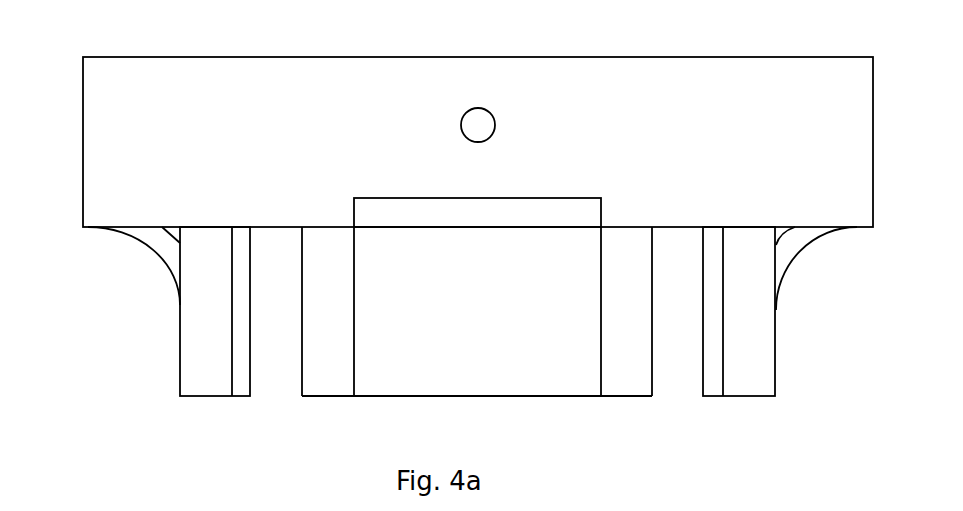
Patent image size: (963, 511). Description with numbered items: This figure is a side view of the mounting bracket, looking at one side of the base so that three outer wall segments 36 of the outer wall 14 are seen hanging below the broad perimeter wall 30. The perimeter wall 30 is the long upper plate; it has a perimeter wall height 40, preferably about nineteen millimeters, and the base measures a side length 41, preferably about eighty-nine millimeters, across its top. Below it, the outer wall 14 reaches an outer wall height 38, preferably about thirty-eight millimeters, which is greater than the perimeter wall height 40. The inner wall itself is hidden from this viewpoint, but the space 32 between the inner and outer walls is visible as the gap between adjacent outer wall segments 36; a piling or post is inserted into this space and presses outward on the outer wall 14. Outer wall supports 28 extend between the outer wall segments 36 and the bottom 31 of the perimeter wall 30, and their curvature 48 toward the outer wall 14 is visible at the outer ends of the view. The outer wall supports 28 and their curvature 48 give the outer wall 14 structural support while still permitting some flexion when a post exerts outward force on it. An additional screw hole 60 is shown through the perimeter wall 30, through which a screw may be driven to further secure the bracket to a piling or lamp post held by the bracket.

The perimeter wall 30 is at (253, 129).
The additional screw holes 60 is at (484, 122).
The outer wall supports 28 is at (468, 315).
The outer wall 14 is at (198, 386).
The outer wall segments 36 is at (621, 385).
The space 32 is at (676, 380).
The bottom of perimeter wall 31 is at (88, 228).
The curvature 48 is at (793, 258).
The side length 41 is at (876, 15).
The outer wall height 38 is at (52, 53).
The perimeter wall height 40 is at (907, 227).